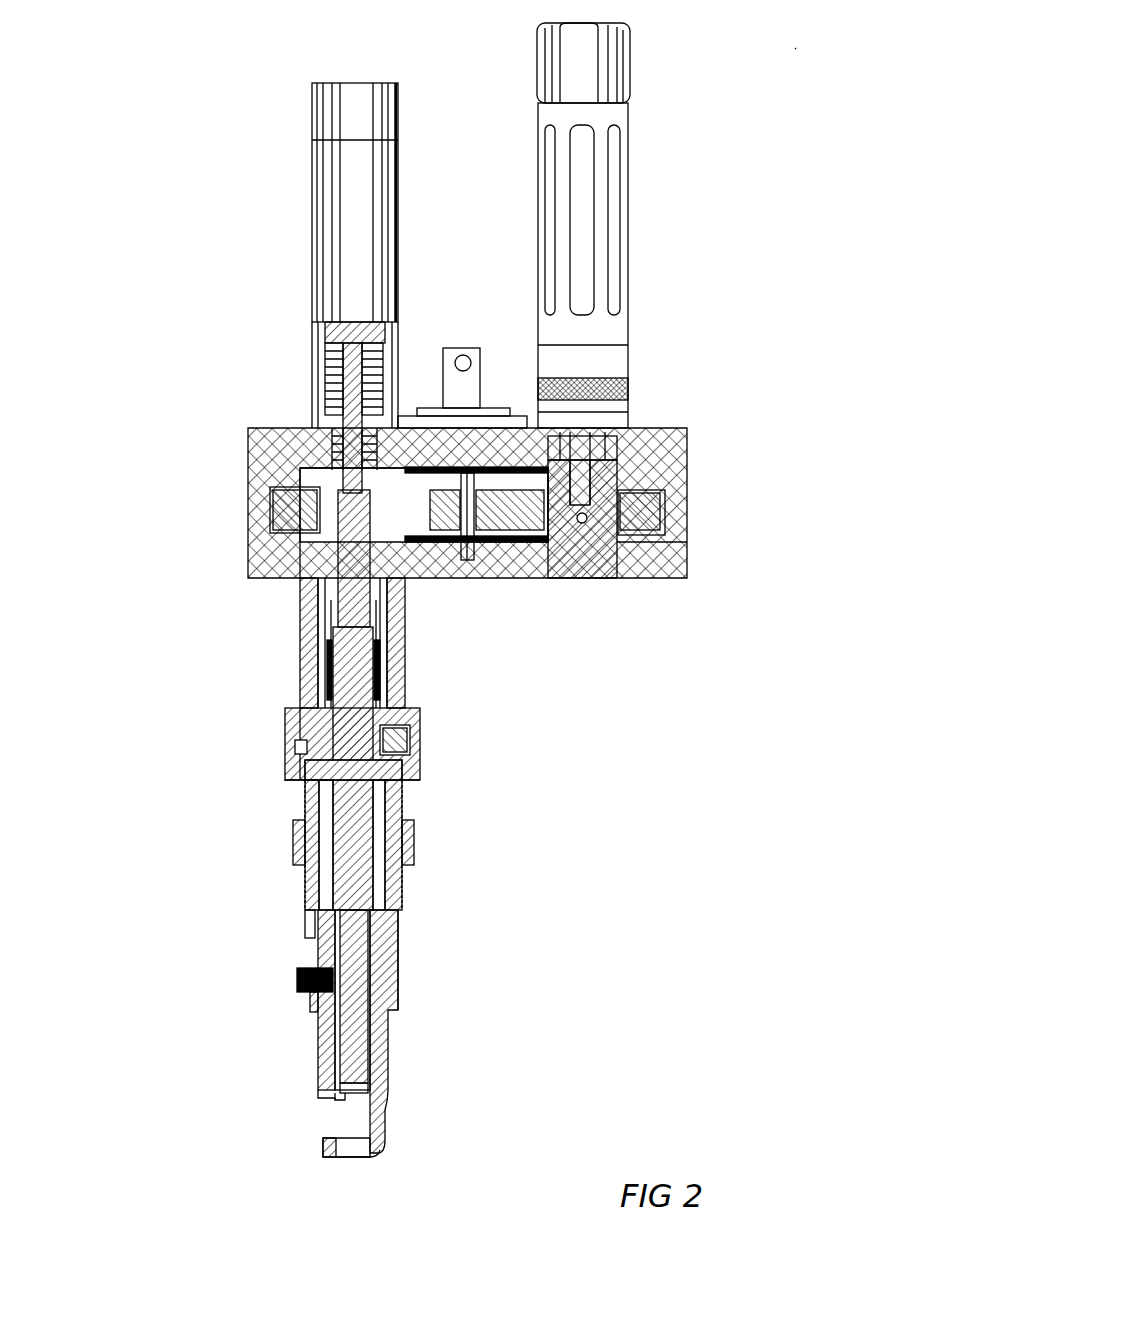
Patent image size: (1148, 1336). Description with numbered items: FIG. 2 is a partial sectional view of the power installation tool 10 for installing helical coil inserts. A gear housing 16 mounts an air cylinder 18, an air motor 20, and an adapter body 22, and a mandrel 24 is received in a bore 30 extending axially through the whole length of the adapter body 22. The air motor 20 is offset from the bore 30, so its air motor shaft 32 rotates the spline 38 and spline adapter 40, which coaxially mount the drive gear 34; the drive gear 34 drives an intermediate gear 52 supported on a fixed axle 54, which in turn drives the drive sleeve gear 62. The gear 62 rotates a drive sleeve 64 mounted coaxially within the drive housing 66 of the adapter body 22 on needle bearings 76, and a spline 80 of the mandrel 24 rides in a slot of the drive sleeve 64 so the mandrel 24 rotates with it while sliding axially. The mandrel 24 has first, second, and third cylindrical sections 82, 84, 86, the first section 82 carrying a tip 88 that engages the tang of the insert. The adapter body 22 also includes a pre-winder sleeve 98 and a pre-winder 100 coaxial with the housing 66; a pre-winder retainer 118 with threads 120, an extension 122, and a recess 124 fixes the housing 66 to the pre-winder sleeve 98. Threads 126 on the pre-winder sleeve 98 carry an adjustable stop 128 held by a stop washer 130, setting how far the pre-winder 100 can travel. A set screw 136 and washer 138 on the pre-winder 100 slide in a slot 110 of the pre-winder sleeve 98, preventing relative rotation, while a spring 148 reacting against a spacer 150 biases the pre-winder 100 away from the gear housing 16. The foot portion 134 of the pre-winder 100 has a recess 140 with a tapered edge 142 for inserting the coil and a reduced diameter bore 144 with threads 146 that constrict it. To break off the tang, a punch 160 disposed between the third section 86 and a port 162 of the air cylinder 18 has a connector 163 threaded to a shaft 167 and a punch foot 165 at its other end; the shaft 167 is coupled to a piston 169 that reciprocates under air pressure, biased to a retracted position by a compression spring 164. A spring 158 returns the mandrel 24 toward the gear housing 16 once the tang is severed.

The power installation tool 10 is at (798, 47).
The gear housing 16 is at (696, 440).
The air cylinder 18 is at (312, 182).
The air motor 20 is at (633, 208).
The adapter body 22 is at (183, 887).
The mandrel 24 is at (365, 980).
The bore 30 is at (380, 895).
The air motor shaft 32 is at (583, 447).
The drive gear 34 is at (672, 500).
The spline 38 is at (690, 470).
The spline adapter 40 is at (640, 575).
The intermediate gear 52 is at (512, 445).
The fixed axle 54 is at (470, 560).
The drive sleeve gear 62 is at (275, 503).
The drive sleeve 64 is at (408, 650).
The drive housing 66 is at (410, 623).
The needle bearing 76 is at (330, 672).
The spline 80 is at (318, 632).
The first cylindrical section 82 is at (358, 1035).
The second cylindrical section 84 is at (405, 772).
The third cylindrical section 86 is at (408, 678).
The tip 88 is at (385, 1103).
The pre-winder sleeve 98 is at (402, 950).
The pre-winder 100 is at (400, 1048).
The slot 110 is at (310, 935).
The pre-winder retainer 118 is at (422, 712).
The threads 120 is at (300, 722).
The extension 122 is at (298, 748).
The recess 124 is at (292, 762).
The threads 126 is at (306, 805).
The stop 128 is at (414, 833).
The stop washer 130 is at (295, 845).
The foot portion 134 is at (323, 1152).
The set screw 136 is at (302, 980).
The washer 138 is at (310, 995).
The recess 140 is at (350, 1117).
The tapered edge 142 is at (318, 1090).
The reduced diameter bore 144 is at (352, 1158).
The threads 146 is at (365, 1160).
The spring 148 is at (400, 803).
The spacer 150 is at (422, 752).
The spring 158 is at (318, 700).
The punch 160 is at (340, 590).
The port 162 is at (340, 465).
The connector 163 is at (345, 487).
The compression spring 164 is at (330, 357).
The punch foot 165 is at (392, 603).
The shaft 167 is at (338, 390).
The piston 169 is at (325, 330).